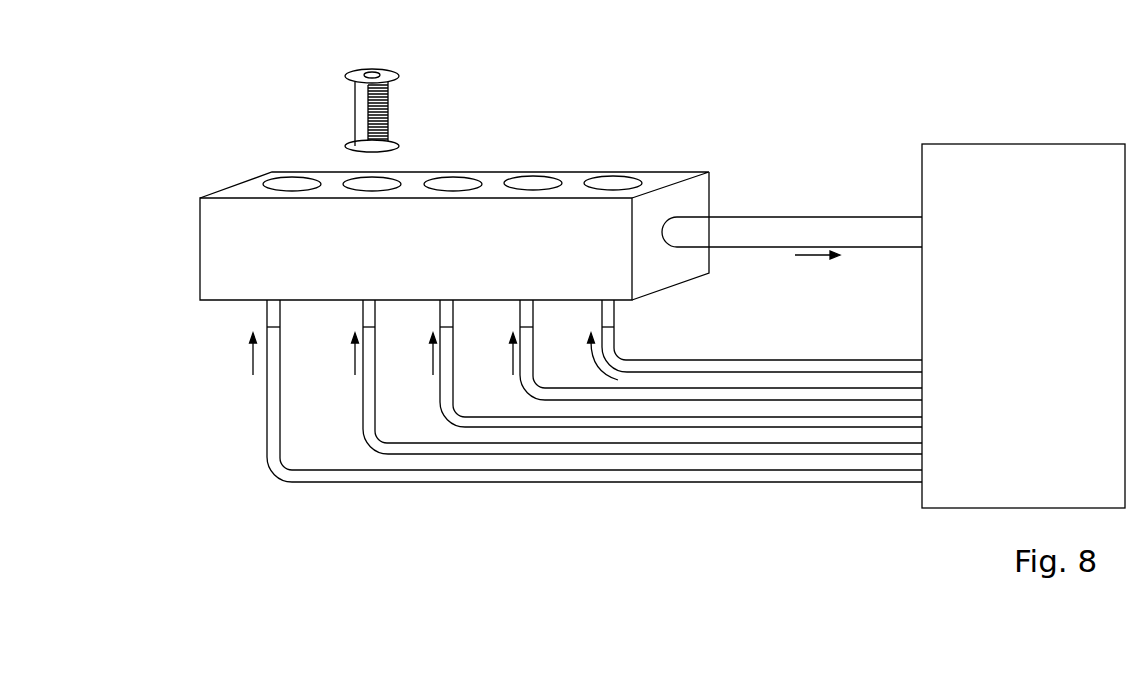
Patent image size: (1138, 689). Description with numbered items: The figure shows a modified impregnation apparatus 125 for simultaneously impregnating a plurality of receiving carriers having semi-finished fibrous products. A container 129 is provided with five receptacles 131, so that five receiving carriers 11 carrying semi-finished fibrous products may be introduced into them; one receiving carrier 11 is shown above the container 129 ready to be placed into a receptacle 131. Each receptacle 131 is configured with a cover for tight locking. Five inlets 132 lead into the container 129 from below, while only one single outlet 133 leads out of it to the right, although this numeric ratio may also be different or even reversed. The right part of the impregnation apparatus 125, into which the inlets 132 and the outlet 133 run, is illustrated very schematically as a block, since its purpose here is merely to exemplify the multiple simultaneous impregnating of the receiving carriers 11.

The receiving carrier 11 is at (412, 53).
The impregnation apparatus 125 is at (999, 113).
The container 129 is at (397, 258).
The receptacle 131 is at (290, 184).
The inlet 132 is at (278, 342).
The outlet 133 is at (826, 228).